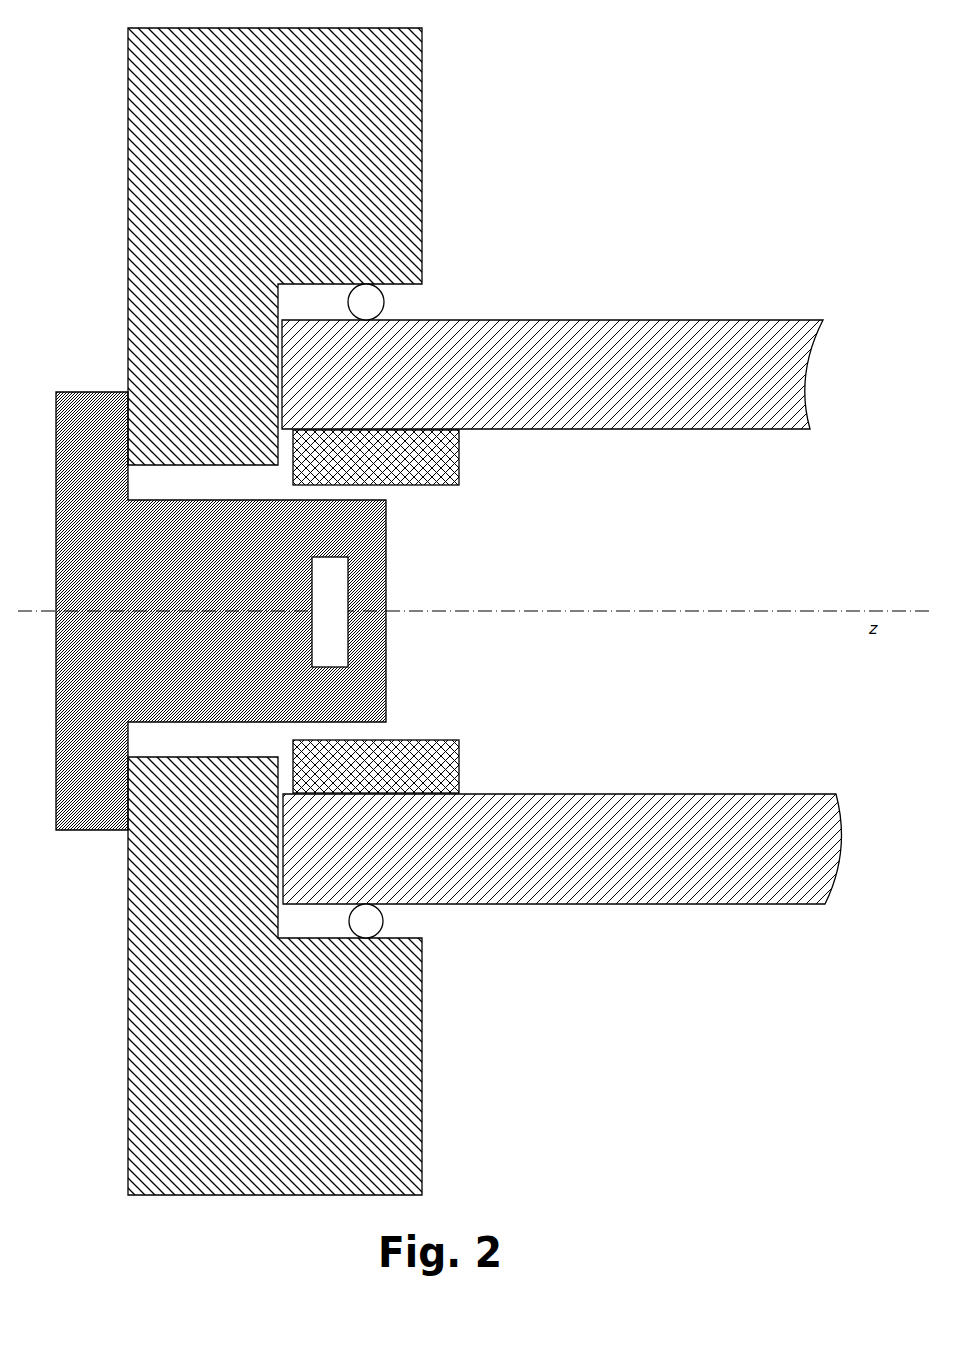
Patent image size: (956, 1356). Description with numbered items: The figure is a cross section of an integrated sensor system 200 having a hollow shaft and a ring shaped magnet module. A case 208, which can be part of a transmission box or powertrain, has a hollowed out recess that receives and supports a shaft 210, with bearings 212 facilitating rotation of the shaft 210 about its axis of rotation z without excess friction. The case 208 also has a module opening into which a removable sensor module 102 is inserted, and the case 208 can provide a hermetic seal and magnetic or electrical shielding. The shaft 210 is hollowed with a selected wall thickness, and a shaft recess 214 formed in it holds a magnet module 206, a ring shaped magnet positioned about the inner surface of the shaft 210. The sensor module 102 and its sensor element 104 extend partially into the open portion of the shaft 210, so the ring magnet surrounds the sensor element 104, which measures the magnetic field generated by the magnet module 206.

The system 200 is at (157, 1232).
The sensor module 102 is at (100, 832).
The sensor element 104 is at (312, 608).
The magnet module 206 is at (460, 466).
The case 208 is at (128, 183).
The shaft 210 is at (565, 320).
The bearings 212 is at (398, 298).
The shaft recess 214 is at (468, 560).